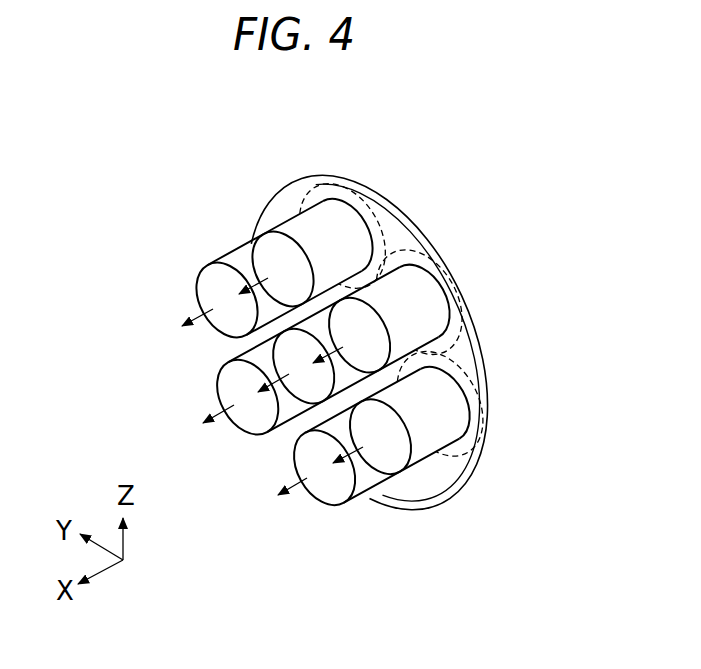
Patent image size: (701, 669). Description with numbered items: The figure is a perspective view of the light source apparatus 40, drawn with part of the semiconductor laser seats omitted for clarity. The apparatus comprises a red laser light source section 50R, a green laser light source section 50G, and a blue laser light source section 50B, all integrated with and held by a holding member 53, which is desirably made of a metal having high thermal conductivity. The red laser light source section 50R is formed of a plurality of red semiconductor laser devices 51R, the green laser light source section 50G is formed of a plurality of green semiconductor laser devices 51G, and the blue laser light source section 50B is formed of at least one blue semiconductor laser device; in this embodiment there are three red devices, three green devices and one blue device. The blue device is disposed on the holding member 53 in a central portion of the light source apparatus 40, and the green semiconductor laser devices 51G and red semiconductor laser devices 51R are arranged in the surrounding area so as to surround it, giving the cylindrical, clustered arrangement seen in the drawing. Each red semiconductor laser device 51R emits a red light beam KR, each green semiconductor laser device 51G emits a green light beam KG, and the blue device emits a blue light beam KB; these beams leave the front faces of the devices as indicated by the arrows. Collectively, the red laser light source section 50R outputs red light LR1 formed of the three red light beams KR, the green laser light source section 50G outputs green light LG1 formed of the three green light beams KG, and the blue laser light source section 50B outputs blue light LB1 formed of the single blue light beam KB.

The light source apparatus 40 is at (417, 223).
The holding member 53 is at (447, 470).
The green semiconductor laser device 51G is at (322, 320).
The red semiconductor laser device 51R is at (271, 372).
The red laser light source section 50R is at (225, 255).
The green laser light source section 50G is at (272, 225).
The blue laser light source section 50B is at (323, 307).
The red light beam KR is at (155, 296).
The blue light beam KB is at (219, 362).
The green light beam KG is at (213, 434).
The red light LR1 is at (182, 326).
The blue light LB1 is at (258, 392).
The green light LG1 is at (203, 423).